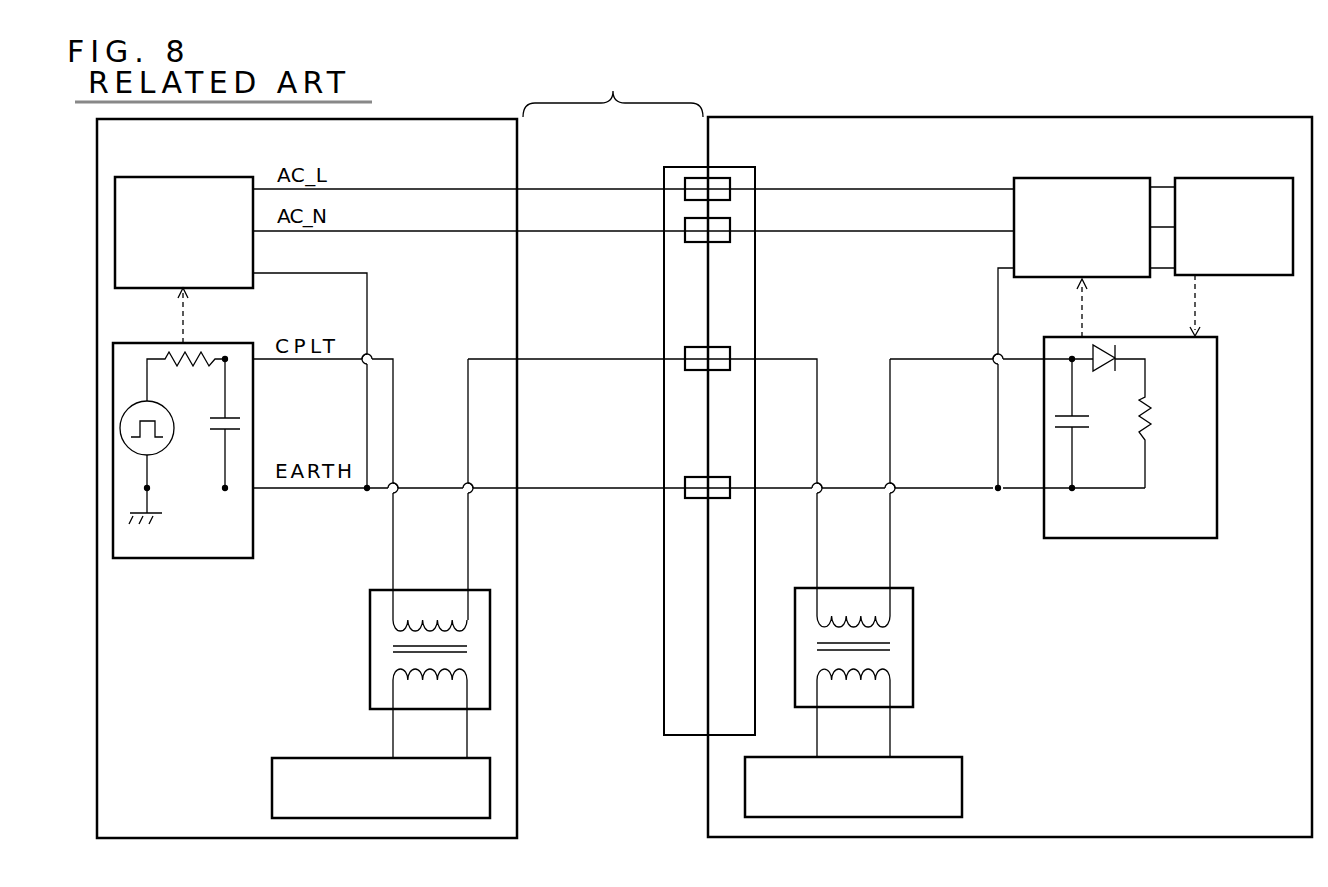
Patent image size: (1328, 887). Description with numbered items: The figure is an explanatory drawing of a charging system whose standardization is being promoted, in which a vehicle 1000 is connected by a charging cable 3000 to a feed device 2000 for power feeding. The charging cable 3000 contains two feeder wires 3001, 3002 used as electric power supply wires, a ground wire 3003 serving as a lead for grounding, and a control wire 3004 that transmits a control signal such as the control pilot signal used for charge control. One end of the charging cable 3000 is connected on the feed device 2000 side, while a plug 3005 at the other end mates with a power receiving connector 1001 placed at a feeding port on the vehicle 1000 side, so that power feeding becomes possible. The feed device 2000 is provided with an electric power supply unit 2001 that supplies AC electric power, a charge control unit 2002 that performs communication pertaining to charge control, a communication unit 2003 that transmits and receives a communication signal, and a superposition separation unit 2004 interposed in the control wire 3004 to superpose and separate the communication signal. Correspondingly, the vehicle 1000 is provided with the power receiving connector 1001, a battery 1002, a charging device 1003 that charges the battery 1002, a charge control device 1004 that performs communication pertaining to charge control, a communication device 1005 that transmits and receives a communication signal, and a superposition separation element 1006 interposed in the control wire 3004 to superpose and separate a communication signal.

The feed device 2000 is at (377, 119).
The electric power supply unit 2001 is at (185, 155).
The charge control unit 2002 is at (168, 558).
The communication unit 2003 is at (272, 783).
The superposition separation unit 2004 is at (370, 673).
The charging cable 3000 is at (613, 89).
The feeder wire 3001 is at (567, 165).
The feeder wire 3002 is at (587, 232).
The ground wire 3003 is at (587, 490).
The control wire 3004 is at (587, 362).
The plug 3005 is at (683, 167).
The vehicle 1000 is at (955, 113).
The power receiving connector 1001 is at (732, 167).
The battery 1002 is at (1247, 157).
The charging device 1003 is at (1030, 177).
The charge control device 1004 is at (1162, 538).
The communication device 1005 is at (962, 778).
The superposition separation element 1006 is at (913, 645).